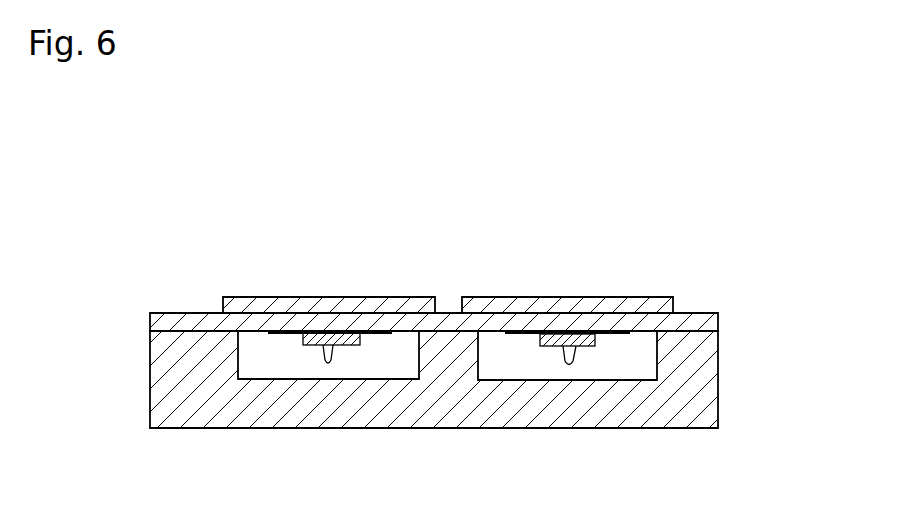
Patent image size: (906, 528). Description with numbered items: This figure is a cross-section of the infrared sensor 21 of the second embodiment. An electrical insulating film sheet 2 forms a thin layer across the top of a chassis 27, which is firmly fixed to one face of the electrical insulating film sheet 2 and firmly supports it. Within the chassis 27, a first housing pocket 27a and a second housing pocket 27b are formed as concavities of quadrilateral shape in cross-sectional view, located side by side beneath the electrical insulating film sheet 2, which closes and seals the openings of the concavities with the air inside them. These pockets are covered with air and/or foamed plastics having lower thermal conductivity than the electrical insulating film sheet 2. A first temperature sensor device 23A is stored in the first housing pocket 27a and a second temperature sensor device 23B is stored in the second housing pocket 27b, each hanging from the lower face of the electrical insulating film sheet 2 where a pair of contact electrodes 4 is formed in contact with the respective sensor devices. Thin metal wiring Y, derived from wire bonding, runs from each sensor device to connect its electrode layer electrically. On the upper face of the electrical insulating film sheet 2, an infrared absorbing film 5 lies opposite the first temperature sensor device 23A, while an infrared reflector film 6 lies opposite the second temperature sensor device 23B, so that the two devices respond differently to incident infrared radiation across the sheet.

The infrared sensor 21 is at (713, 251).
The electrical insulating film sheet 2 is at (693, 313).
The chassis 27 is at (718, 409).
The first housing pocket 27a is at (360, 370).
The second housing pocket 27b is at (528, 380).
The infrared absorbing film 5 is at (337, 297).
The infrared reflector film 6 is at (557, 298).
The contact electrodes 4 is at (283, 337).
The first temperature sensor device 23A is at (308, 357).
The second temperature sensor device 23B is at (592, 357).
The thin metal wiring Y is at (327, 367).